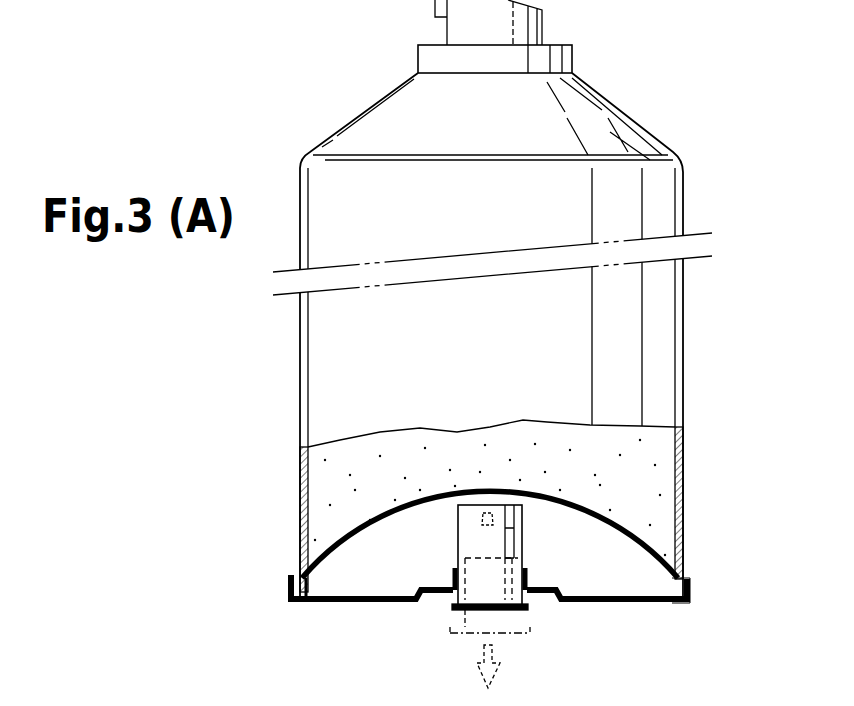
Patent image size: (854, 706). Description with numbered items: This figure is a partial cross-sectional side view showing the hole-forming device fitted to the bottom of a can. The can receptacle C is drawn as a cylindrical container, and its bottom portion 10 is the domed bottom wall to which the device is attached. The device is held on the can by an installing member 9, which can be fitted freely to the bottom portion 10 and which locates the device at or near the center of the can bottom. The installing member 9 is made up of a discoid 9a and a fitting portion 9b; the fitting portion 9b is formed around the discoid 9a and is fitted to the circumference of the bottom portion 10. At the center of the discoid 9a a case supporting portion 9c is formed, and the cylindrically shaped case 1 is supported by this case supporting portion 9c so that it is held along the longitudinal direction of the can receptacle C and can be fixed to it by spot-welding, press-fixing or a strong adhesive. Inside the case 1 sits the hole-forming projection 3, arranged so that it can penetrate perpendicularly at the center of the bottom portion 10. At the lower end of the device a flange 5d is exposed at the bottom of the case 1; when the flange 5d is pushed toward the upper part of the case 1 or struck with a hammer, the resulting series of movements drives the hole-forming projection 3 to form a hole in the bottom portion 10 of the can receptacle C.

The can receptacle C is at (702, 368).
The case 1 is at (535, 546).
The hole-forming projection 3 is at (453, 529).
The installing member 9 is at (391, 612).
The discoid 9a is at (612, 605).
The fitting portion 9b is at (690, 587).
The case supporting portion 9c is at (455, 580).
The bottom portion 10 is at (608, 530).
The flange 5d is at (510, 612).